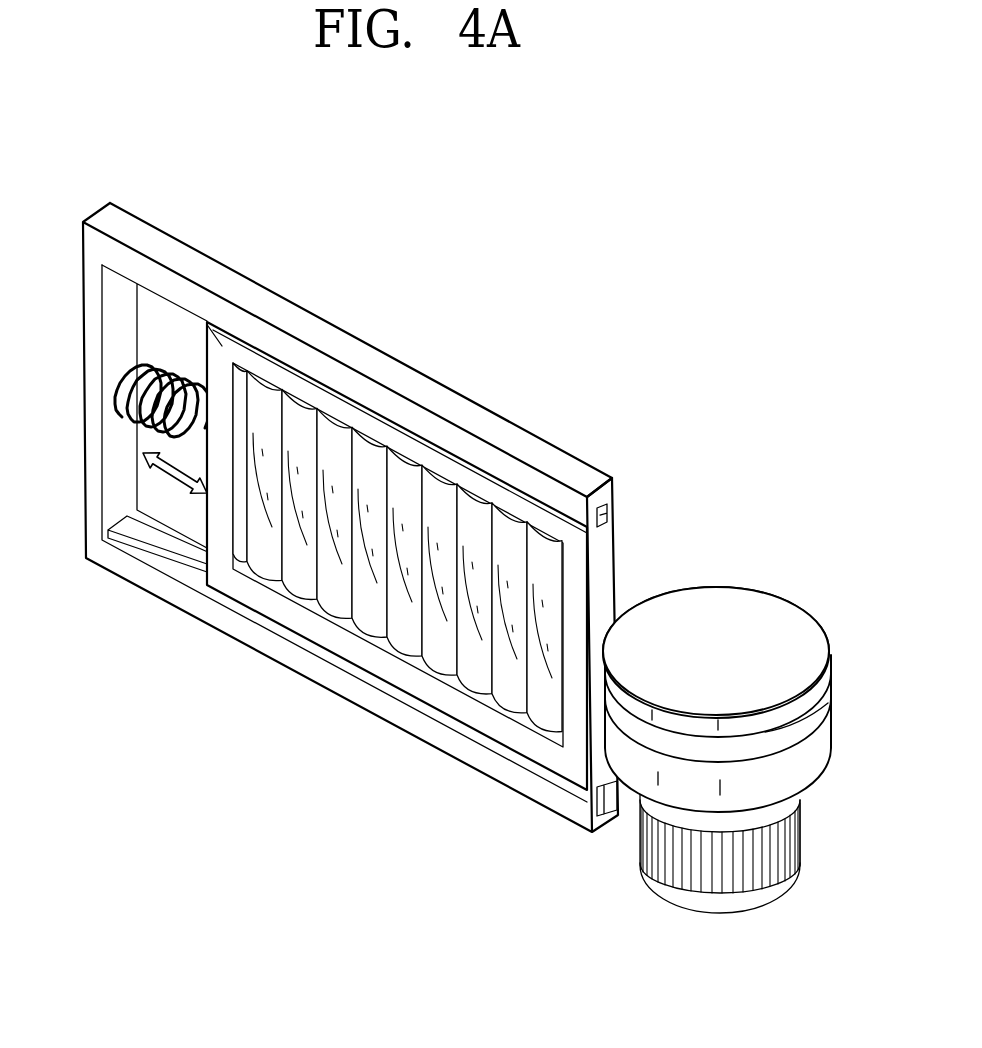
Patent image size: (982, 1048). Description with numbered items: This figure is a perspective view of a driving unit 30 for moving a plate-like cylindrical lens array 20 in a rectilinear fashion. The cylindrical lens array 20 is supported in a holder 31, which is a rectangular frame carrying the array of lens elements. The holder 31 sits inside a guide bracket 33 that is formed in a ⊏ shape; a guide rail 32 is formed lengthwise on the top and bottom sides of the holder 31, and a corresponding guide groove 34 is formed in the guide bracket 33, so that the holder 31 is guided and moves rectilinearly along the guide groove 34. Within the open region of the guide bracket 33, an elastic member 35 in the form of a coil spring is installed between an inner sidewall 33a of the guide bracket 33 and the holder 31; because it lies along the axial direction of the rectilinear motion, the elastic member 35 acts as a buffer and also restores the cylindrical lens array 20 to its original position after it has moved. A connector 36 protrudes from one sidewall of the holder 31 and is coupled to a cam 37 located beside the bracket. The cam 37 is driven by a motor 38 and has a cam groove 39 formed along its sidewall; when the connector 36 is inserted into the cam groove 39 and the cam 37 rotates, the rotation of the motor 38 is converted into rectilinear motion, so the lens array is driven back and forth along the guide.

The cylindrical lens array 20 is at (377, 467).
The driving unit 30 is at (716, 546).
The holder 31 is at (210, 318).
The guide rail 32 is at (605, 515).
The guide bracket 33 is at (197, 597).
The inner sidewall 33a is at (121, 323).
The guide groove 34 is at (127, 530).
The elastic member 35 is at (123, 407).
The connector 36 is at (593, 660).
The cam 37 is at (803, 627).
The motor 38 is at (773, 877).
The cam groove 39 is at (707, 752).